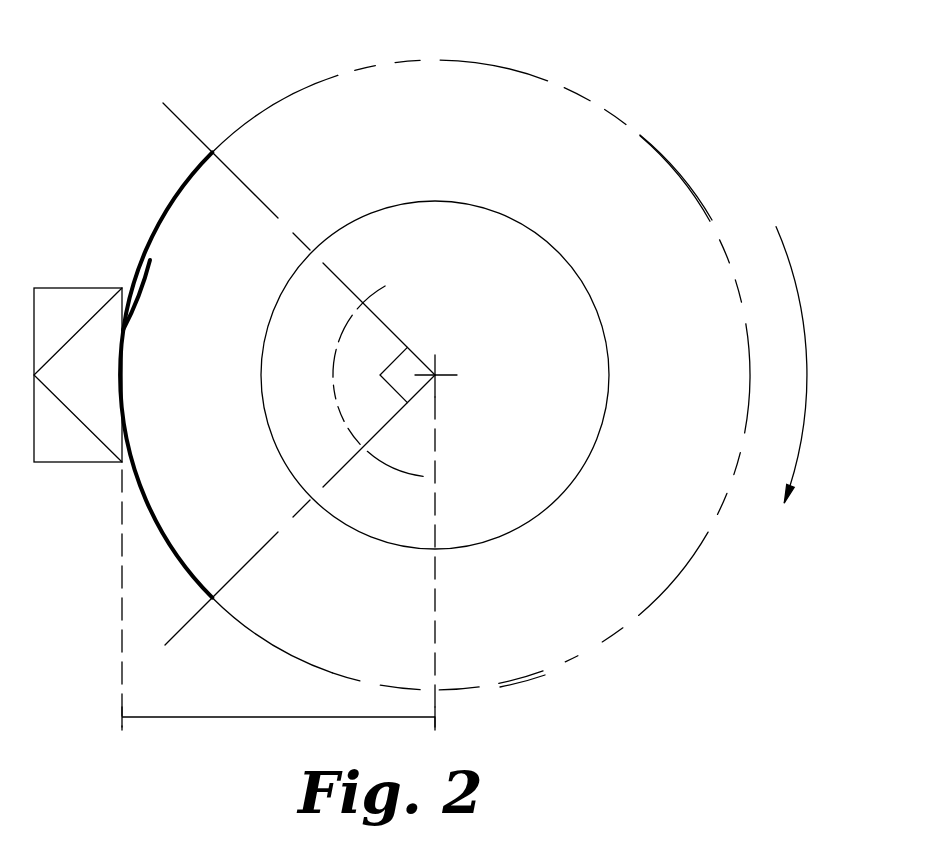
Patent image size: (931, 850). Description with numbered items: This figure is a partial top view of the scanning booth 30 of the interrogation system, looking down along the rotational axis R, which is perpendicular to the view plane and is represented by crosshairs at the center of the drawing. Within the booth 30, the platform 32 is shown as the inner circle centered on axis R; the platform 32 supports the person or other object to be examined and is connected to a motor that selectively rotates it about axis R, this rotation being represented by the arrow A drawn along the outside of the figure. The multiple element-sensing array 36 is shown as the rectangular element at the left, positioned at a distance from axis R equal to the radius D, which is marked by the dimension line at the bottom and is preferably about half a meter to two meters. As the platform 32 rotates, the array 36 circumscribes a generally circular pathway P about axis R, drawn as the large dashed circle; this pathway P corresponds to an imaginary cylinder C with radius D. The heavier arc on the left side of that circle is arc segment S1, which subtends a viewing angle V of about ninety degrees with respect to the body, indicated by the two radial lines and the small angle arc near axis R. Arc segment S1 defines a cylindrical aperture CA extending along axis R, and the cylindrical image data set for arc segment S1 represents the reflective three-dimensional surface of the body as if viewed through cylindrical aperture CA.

The scanning/illumination booth 30 is at (602, 80).
The platform 32 is at (543, 237).
The multiple element-sensing array 36 is at (60, 463).
The arc segment S1 is at (183, 189).
The cylindrical aperture CA is at (138, 277).
The rotational axis R is at (457, 375).
The viewing angle V is at (342, 412).
The arrow A is at (807, 357).
The imaginary cylinder C is at (672, 165).
The circular pathway P is at (578, 656).
The radius D is at (213, 717).